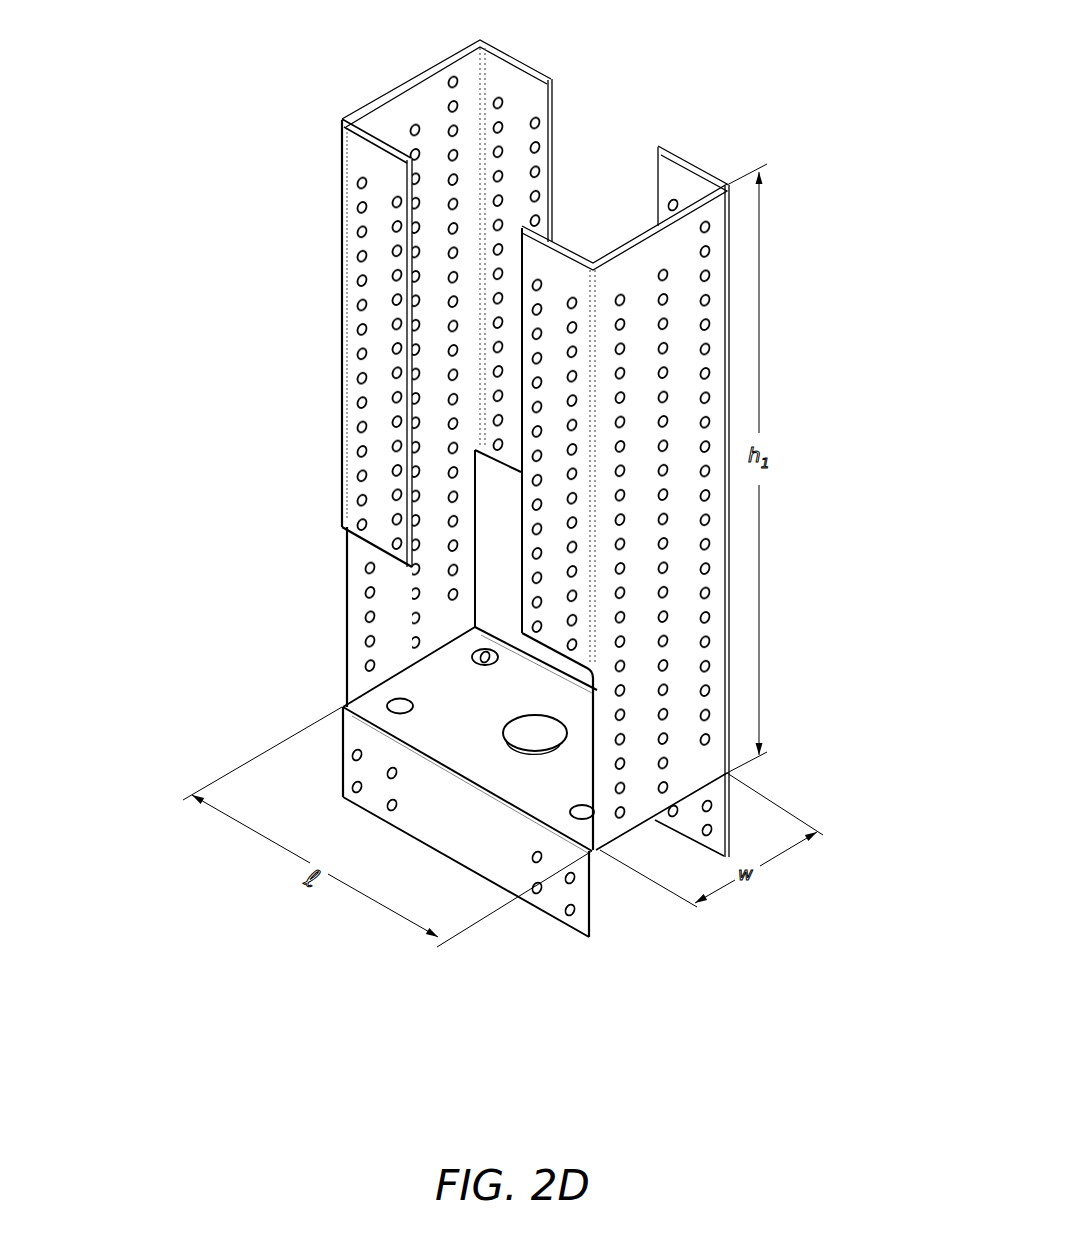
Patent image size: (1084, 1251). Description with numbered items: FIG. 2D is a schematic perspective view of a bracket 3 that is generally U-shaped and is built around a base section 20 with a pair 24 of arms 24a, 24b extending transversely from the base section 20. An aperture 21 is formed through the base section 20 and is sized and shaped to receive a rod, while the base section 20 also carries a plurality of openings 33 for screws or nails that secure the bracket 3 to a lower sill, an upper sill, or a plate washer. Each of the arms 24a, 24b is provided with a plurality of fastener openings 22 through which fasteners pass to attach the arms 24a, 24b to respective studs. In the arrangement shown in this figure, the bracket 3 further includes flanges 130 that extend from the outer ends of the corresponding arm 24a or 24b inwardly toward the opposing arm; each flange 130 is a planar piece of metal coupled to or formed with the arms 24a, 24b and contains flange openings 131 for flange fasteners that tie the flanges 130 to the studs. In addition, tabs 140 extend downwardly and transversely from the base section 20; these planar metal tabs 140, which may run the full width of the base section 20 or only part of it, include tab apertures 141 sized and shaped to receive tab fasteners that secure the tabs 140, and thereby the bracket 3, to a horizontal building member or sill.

The bracket 3 is at (328, 114).
The base section 20 is at (542, 794).
The aperture 21 is at (543, 737).
The fastener openings 22 is at (449, 104).
The pair of arms 24 is at (445, 143).
The arm 24a is at (408, 96).
The arm 24b is at (684, 226).
The openings 33 is at (388, 704).
The flanges 130 is at (376, 280).
The flange openings 131 is at (360, 402).
The tabs 140 is at (439, 828).
The tab apertures 141 is at (341, 798).